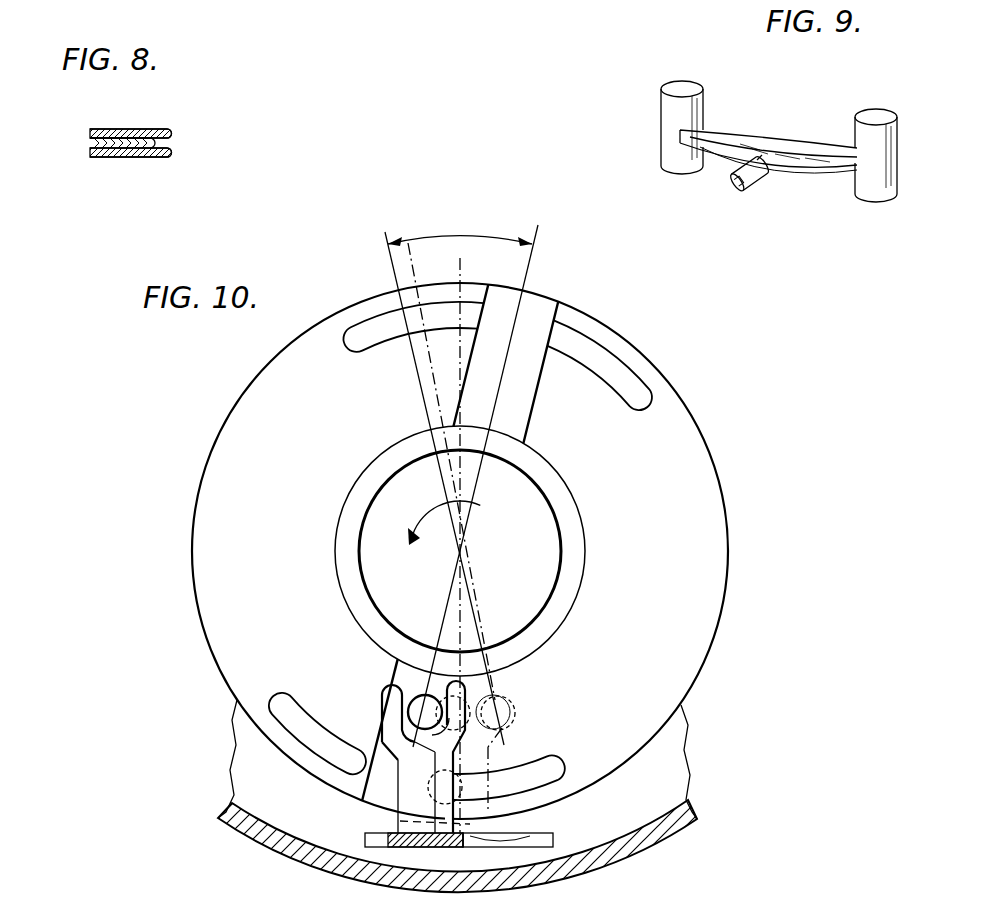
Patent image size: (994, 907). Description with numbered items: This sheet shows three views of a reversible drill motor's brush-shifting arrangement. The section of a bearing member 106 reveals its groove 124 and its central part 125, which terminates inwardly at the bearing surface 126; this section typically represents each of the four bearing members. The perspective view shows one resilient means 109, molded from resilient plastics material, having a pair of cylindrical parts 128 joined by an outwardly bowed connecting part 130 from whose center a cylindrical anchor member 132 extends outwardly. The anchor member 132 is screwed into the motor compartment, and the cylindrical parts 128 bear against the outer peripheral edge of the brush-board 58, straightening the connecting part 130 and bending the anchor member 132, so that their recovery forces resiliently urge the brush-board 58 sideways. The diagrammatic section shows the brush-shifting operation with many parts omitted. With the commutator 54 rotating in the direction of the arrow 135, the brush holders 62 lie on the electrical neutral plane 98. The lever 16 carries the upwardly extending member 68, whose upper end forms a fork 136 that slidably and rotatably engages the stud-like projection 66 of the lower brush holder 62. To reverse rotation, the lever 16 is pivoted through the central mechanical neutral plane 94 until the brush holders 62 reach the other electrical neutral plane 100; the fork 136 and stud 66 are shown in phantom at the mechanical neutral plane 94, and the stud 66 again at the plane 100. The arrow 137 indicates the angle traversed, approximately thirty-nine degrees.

In FIG. 8, the bearing member 106 is at (82, 148).
In FIG. 8, the groove 124 is at (175, 156).
In FIG. 8, the central part 125 is at (106, 129).
In FIG. 8, the bearing surface 126 is at (158, 137).
In FIG. 9, the cylindrical parts 128 is at (693, 85).
In FIG. 9, the resilient means 109 is at (772, 118).
In FIG. 9, the bowed connecting part 130 is at (803, 168).
In FIG. 9, the cylindrical anchor member 132 is at (757, 183).
In FIG. 10, the brush-board 58 is at (727, 580).
In FIG. 10, the commutator 54 is at (551, 529).
In FIG. 10, the brush holders 62 is at (543, 301).
In FIG. 10, the stud-like projection 66 is at (415, 655).
In FIG. 10, the upwardly disposed member 68 is at (405, 797).
In FIG. 10, the central mechanical neutral plane 94 is at (460, 267).
In FIG. 10, the electrical neutral plane 98 is at (529, 275).
In FIG. 10, the electrical neutral plane 100 is at (385, 252).
In FIG. 10, the arrow 135 is at (480, 505).
In FIG. 10, the fork 136 is at (382, 705).
In FIG. 10, the arrow 137 is at (461, 237).
In FIG. 10, the lever 16 is at (490, 834).